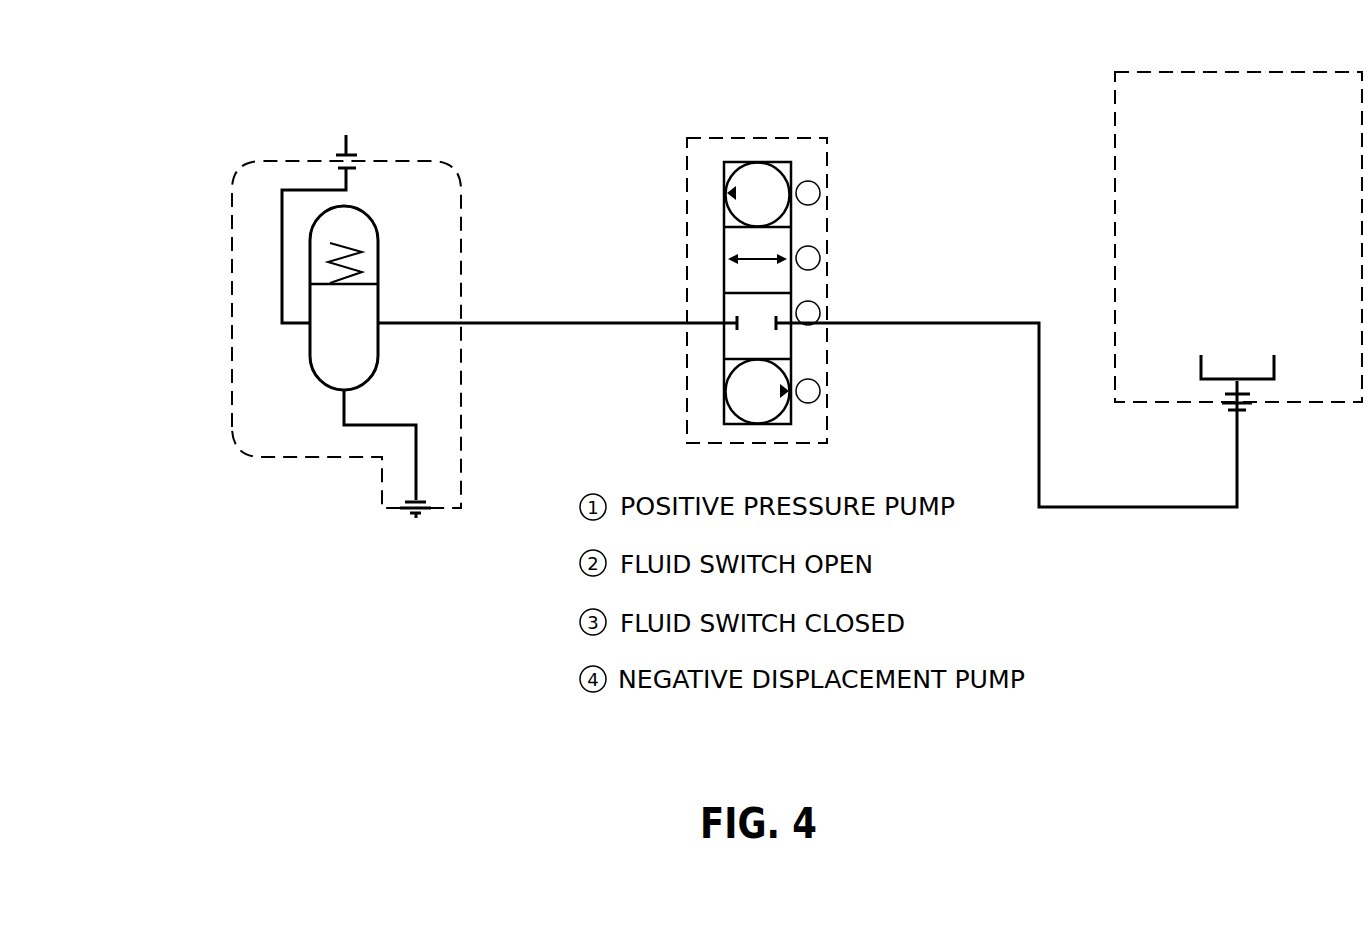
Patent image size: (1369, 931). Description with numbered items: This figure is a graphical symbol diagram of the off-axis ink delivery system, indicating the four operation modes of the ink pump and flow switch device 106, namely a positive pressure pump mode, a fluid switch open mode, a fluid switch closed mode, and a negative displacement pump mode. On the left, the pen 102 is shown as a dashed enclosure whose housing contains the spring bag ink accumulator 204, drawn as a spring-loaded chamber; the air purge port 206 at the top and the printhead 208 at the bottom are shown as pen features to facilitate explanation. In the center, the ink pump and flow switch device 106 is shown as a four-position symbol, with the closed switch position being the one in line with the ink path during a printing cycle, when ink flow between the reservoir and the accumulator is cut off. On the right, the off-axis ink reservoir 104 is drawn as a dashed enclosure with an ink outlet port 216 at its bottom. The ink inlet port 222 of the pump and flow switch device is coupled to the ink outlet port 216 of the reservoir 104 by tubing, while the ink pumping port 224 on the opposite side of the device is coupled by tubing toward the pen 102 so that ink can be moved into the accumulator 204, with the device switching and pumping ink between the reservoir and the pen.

The pen 102 is at (258, 250).
The off-axis ink reservoir 104 is at (1150, 97).
The ink pump and flow switch device 106 is at (808, 153).
The spring bag ink accumulator 204 is at (378, 228).
The air purge port 206 is at (353, 153).
The printhead 208 is at (413, 518).
The ink outlet port 216 is at (1245, 412).
The ink inlet port 222 is at (828, 321).
The ink pumping port 224 is at (708, 320).